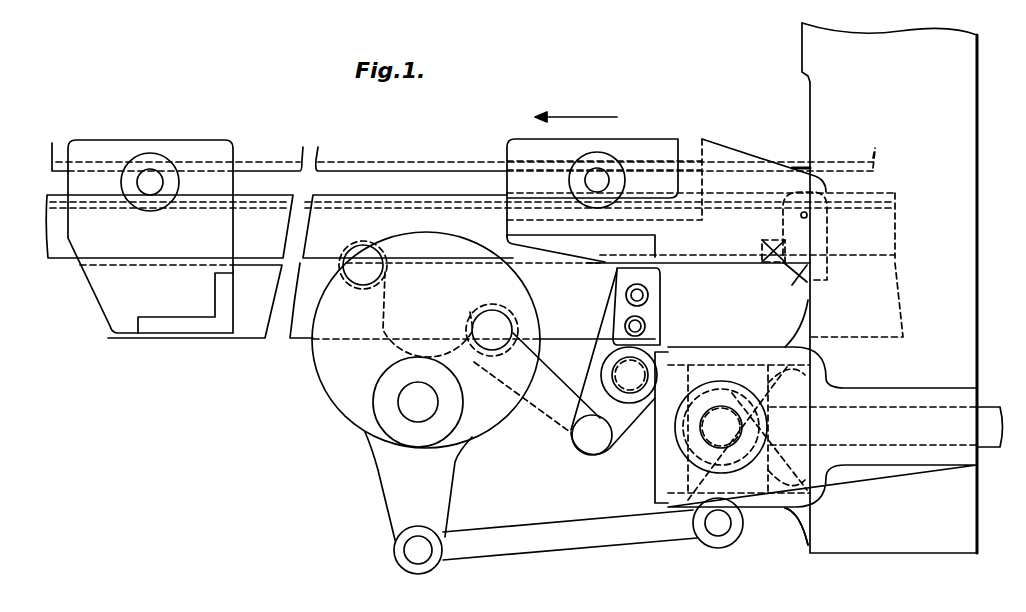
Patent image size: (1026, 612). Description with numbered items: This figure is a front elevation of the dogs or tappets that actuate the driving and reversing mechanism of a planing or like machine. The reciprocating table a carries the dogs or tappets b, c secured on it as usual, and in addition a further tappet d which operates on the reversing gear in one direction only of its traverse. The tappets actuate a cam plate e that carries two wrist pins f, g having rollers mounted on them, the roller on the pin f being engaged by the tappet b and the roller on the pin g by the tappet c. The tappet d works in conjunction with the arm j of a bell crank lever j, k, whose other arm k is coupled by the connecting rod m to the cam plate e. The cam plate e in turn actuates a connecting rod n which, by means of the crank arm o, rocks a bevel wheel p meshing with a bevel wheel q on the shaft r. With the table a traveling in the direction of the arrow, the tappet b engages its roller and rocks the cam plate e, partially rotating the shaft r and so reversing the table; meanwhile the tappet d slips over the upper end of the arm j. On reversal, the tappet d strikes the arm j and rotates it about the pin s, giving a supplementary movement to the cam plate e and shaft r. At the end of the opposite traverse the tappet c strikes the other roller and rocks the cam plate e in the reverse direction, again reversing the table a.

The reciprocating table a is at (388, 182).
The tappet b is at (598, 245).
The tappet c is at (226, 316).
The further tappet d is at (806, 270).
The cam plate e is at (426, 403).
The wrist pin f is at (362, 277).
The wrist pin g is at (495, 322).
The arm of bell crank lever j is at (650, 299).
The arm of bell crank lever k is at (622, 420).
The connecting rod m is at (549, 400).
The connecting rod n is at (577, 540).
The crank arm o is at (748, 468).
The bevel wheel p is at (825, 366).
The bevel wheel q is at (812, 490).
The shaft r is at (987, 417).
The pin s is at (626, 368).